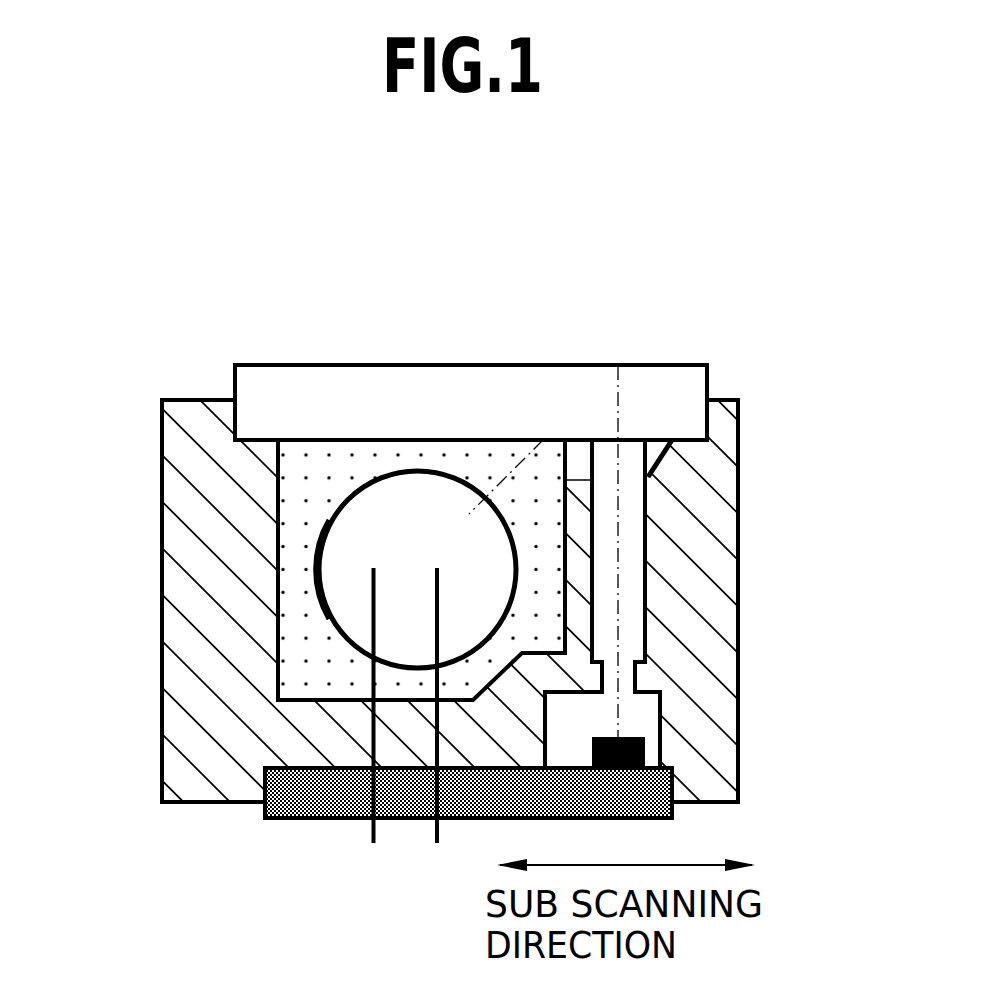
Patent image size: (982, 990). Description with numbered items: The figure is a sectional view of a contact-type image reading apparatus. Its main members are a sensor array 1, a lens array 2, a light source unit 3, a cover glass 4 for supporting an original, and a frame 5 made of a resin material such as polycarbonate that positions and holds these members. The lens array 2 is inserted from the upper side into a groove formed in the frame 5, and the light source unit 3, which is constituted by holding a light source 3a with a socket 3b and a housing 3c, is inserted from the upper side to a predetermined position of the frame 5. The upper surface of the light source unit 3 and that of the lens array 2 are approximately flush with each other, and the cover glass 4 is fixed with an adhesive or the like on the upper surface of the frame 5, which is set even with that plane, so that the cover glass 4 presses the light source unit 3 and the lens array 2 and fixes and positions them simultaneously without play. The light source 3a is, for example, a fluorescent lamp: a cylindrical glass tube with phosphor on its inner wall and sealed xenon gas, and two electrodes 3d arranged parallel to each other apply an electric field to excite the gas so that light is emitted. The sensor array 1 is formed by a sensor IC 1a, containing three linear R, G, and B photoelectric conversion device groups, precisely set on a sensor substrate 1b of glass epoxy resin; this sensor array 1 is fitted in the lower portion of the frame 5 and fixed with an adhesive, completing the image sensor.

The sensor array 1 is at (657, 783).
The sensor IC 1a is at (647, 738).
The sensor substrate 1b is at (283, 812).
The lens array 2 is at (633, 507).
The light source unit 3 is at (340, 540).
The light source 3a is at (467, 487).
The socket 3b is at (323, 582).
The housing 3c is at (381, 458).
The electrodes 3d is at (373, 835).
The cover glass 4 is at (283, 378).
The frame 5 is at (200, 652).